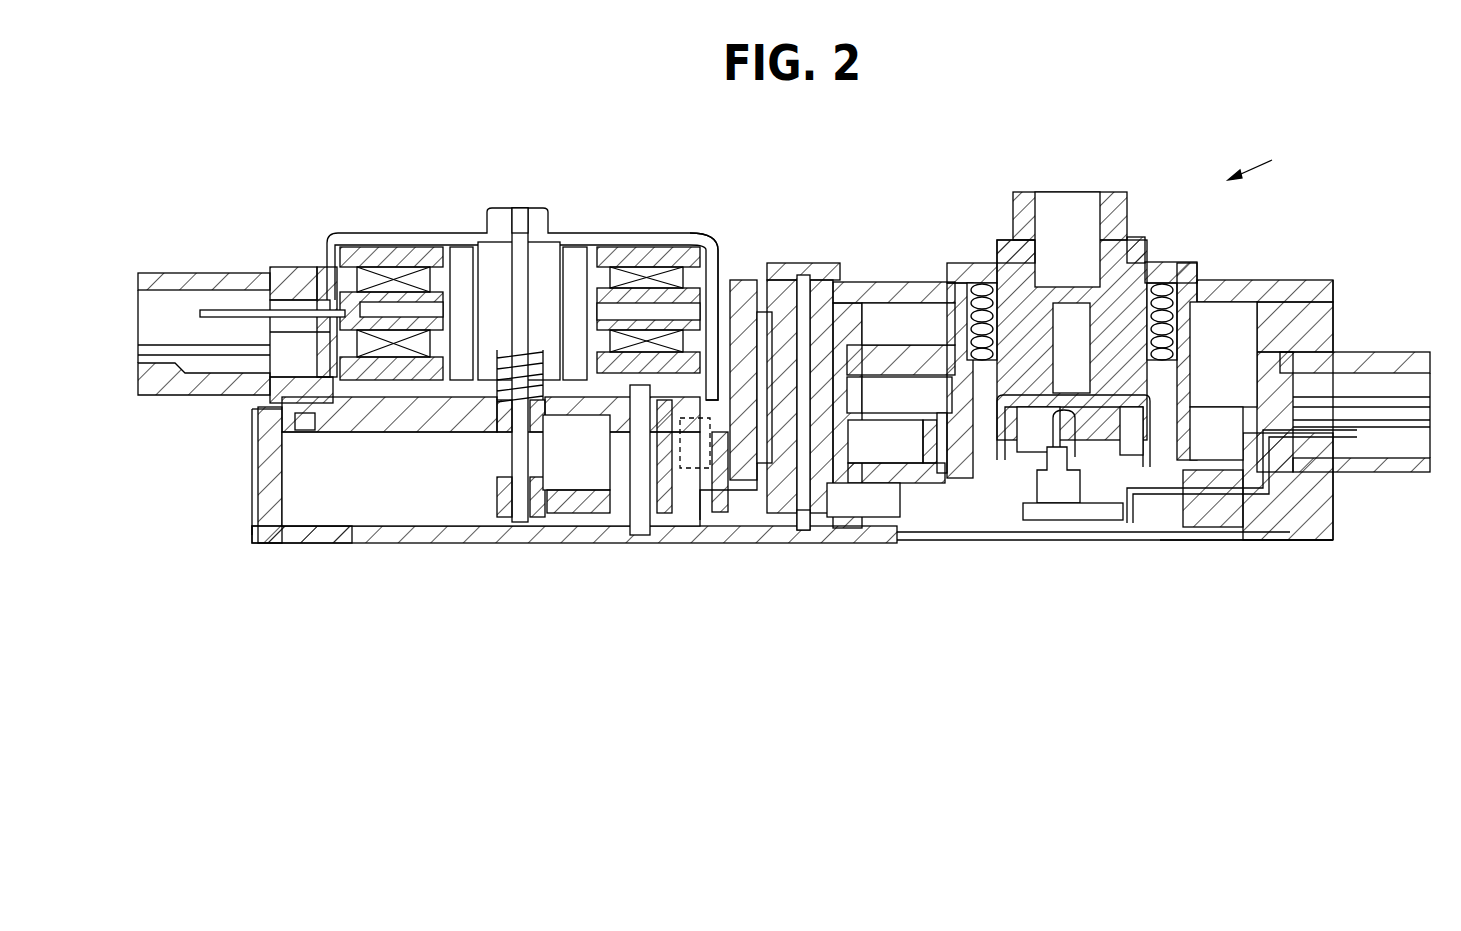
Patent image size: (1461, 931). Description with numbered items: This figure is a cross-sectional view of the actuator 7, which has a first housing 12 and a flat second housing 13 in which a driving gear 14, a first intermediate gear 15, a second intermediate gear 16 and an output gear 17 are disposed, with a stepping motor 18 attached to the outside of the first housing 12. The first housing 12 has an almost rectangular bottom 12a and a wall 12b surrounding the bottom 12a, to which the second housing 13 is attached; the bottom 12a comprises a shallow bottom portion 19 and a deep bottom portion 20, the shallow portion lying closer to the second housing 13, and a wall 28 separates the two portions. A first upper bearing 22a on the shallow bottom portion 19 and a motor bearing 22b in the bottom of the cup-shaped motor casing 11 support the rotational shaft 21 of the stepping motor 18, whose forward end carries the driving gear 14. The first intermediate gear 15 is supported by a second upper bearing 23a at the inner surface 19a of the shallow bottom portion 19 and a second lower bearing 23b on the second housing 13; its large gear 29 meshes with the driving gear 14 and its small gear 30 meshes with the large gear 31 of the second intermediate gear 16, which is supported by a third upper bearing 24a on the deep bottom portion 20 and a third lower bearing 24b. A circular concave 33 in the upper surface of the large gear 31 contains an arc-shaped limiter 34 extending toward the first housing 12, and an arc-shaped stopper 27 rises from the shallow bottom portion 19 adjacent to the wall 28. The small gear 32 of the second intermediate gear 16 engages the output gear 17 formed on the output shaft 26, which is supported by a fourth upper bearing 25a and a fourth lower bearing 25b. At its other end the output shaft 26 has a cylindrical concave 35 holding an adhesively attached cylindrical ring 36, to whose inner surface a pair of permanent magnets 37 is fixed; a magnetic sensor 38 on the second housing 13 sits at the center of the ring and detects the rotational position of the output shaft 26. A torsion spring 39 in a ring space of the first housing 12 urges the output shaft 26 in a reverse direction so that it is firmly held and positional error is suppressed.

The actuator 7 is at (1259, 158).
The motor casing 11 is at (585, 240).
The first housing 12 is at (1290, 280).
The bottom 12a is at (1225, 302).
The wall 12b is at (1340, 313).
The second housing 13 is at (282, 544).
The driving gear 14 is at (497, 500).
The first intermediate gear 15 is at (565, 526).
The second intermediate gear 16 is at (873, 520).
The output gear 17 is at (905, 310).
The stepping motor 18 is at (346, 232).
The shallow bottom portion 19 is at (262, 456).
The inner surface 19a is at (263, 399).
The deep bottom portion 20 is at (1225, 280).
The rotational shaft 21 is at (512, 462).
The first upper bearing 22a is at (510, 432).
The motor bearing 22b is at (496, 222).
The second upper bearing 23a is at (625, 445).
The second lower bearing 23b is at (640, 543).
The third upper bearing 24a is at (803, 275).
The third lower bearing 24b is at (803, 532).
The fourth upper bearing 25a is at (1012, 240).
The fourth lower bearing 25b is at (1197, 428).
The output shaft 26 is at (1130, 210).
The stopper 27 is at (764, 530).
The wall 28 is at (712, 258).
The large gear 29 is at (716, 530).
The small gear 30 is at (600, 526).
The large gear 31 is at (942, 541).
The small gear 32 is at (745, 290).
The circular concave 33 is at (922, 452).
The limiter 34 is at (690, 526).
The cylindrical concave 35 is at (1000, 470).
The cylindrical ring 36 is at (1148, 530).
The permanent magnets 37 is at (1132, 430).
The magnetic sensor 38 is at (1055, 505).
The torsion spring 39 is at (975, 283).